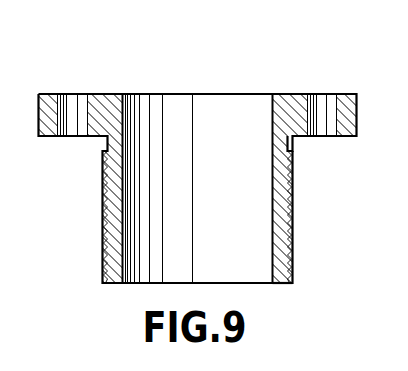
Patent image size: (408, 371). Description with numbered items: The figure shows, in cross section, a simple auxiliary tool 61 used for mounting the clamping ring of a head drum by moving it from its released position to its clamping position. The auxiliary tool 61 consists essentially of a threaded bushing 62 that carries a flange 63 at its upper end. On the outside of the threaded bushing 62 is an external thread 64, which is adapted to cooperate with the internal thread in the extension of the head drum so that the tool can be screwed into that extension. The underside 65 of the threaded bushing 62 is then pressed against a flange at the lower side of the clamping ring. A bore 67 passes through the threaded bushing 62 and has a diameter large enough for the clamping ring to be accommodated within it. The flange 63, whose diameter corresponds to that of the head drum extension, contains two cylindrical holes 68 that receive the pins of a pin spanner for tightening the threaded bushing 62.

The auxiliary tool 61 is at (213, 179).
The threaded bushing 62 is at (282, 236).
The flange 63 is at (350, 112).
The external thread 64 is at (289, 258).
The underside 65 is at (283, 286).
The bore 67 is at (175, 117).
The cylindrical holes 68 is at (80, 110).